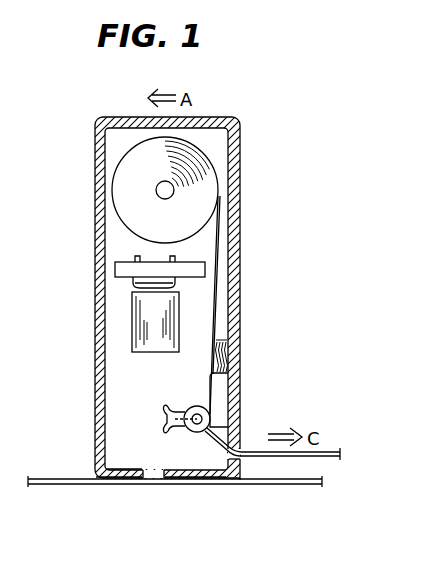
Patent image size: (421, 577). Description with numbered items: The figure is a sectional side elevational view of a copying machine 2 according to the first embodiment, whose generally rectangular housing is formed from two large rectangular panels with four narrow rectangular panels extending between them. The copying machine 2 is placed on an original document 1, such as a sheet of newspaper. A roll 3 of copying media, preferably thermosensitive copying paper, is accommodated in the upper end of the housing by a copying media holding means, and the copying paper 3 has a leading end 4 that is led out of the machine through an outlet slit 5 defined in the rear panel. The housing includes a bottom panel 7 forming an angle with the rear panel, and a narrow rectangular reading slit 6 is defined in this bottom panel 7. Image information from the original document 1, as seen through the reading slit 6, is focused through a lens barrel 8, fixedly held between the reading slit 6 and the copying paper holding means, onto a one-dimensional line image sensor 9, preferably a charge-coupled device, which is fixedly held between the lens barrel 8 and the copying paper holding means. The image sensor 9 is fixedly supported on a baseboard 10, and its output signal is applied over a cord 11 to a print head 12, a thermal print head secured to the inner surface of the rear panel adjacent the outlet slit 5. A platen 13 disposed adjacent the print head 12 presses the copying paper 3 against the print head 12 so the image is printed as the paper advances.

The original document 1 is at (52, 479).
The copying machine 2 is at (235, 208).
The roll of copying media 3 is at (202, 188).
The leading end 4 is at (333, 450).
The outlet slit 5 is at (240, 480).
The reading slit 6 is at (152, 470).
The bottom panel 7 is at (175, 479).
The lens barrel 8 is at (140, 328).
The one-dimensional line image sensor 9 is at (140, 285).
The baseboard 10 is at (137, 262).
The cord 11 is at (226, 352).
The print head 12 is at (222, 388).
The platen 13 is at (210, 420).